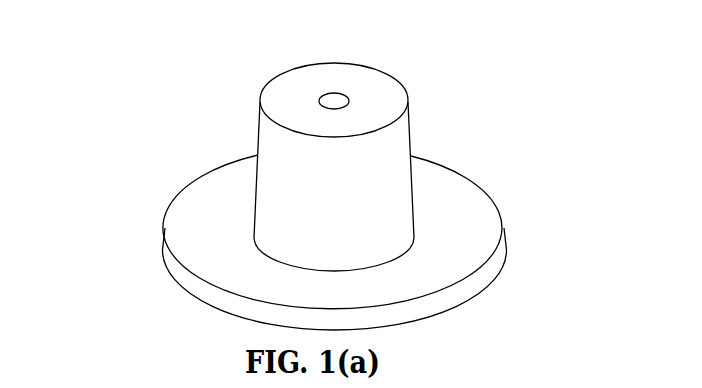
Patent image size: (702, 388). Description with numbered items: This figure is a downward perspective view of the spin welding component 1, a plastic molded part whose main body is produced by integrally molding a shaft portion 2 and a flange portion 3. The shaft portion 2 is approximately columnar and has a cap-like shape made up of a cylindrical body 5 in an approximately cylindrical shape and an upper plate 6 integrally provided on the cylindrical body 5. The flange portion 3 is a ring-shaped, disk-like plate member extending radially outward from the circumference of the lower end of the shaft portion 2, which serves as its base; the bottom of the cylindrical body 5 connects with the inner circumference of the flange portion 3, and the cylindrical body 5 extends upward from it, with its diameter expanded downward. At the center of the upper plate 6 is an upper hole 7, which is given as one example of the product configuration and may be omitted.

The spin welding component 1 is at (122, 72).
The shaft portion 2 is at (257, 137).
The flange portion 3 is at (200, 217).
The cylindrical body 5 is at (398, 145).
The upper plate 6 is at (390, 100).
The upper hole 7 is at (338, 100).